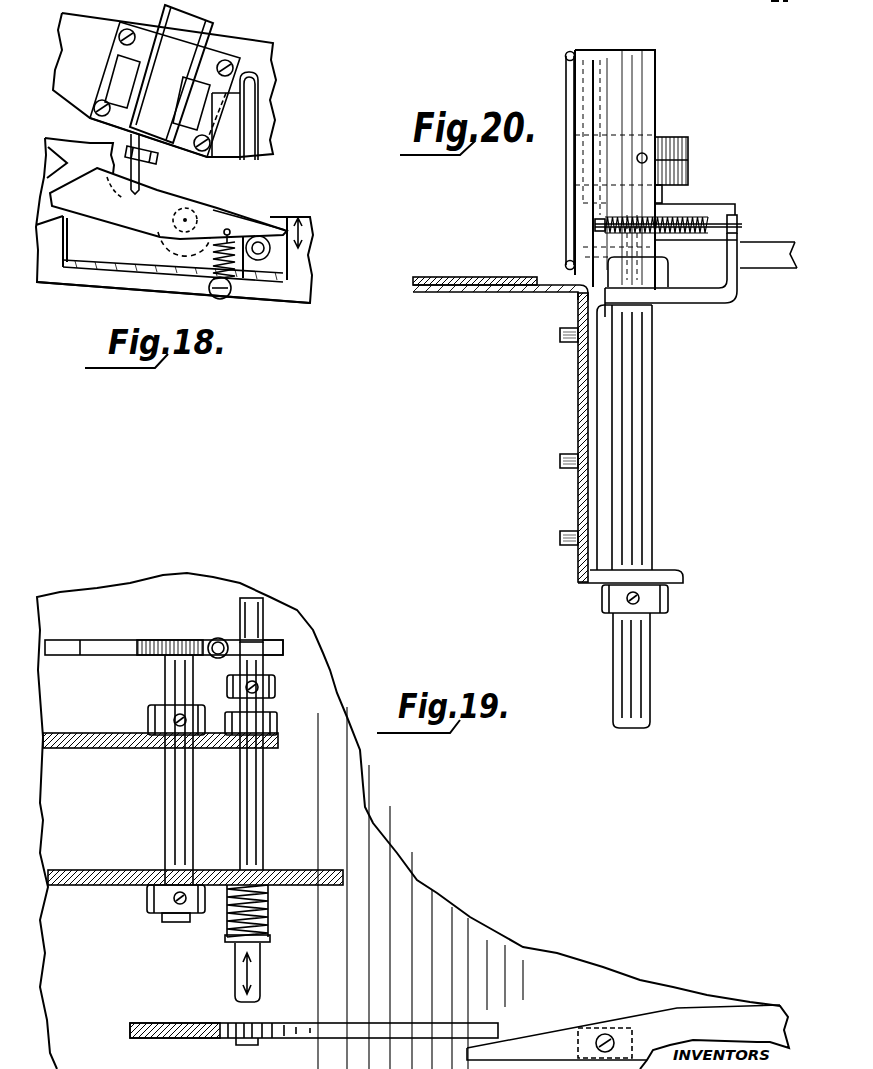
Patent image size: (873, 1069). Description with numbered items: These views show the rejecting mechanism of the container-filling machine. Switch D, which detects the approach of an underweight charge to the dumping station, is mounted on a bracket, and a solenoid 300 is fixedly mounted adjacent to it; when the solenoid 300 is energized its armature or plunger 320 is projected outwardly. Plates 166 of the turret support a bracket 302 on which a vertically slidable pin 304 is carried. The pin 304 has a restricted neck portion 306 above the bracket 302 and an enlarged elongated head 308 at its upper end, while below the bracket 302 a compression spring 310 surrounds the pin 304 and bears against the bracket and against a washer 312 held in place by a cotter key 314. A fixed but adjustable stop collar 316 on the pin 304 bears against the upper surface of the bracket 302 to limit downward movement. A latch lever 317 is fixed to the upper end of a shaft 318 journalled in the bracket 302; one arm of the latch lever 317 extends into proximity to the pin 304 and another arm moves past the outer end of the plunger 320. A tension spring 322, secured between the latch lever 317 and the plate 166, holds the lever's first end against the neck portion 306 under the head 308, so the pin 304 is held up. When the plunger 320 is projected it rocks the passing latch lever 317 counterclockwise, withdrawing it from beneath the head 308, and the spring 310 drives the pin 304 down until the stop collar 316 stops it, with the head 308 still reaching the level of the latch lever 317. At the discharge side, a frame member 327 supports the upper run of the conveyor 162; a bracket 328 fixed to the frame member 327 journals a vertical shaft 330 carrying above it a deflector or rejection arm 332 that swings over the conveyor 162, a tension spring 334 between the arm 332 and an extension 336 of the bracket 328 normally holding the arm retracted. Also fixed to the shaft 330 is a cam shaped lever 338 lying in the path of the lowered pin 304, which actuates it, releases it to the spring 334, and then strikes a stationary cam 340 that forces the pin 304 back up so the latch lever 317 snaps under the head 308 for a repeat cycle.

In FIG. 18, the solenoid 300 is at (182, 58).
In FIG. 18, the switch D is at (260, 100).
In FIG. 18, the armature or plunger 320 is at (142, 182).
In FIG. 18, the bracket 302 is at (290, 268).
In FIG. 19, the bracket 302 is at (108, 827).
In FIG. 18, the plate 166 is at (288, 295).
In FIG. 18, the latch lever 317 is at (210, 217).
In FIG. 19, the latch lever 317 is at (135, 648).
In FIG. 18, the shaft 318 is at (155, 215).
In FIG. 19, the shaft 318 is at (173, 690).
In FIG. 18, the tension spring 322 is at (210, 270).
In FIG. 19, the tension spring 322 is at (216, 637).
In FIG. 18, the vertically slidable pin 304 is at (262, 234).
In FIG. 19, the vertically slidable pin 304 is at (263, 810).
In FIG. 18, the enlarged elongated head 308 is at (258, 283).
In FIG. 19, the enlarged elongated head 308 is at (263, 610).
In FIG. 19, the stationary cam 340 is at (640, 1023).
In FIG. 19, the restricted neck portion 306 is at (262, 662).
In FIG. 19, the stop collar 316 is at (277, 688).
In FIG. 19, the compression spring 310 is at (267, 915).
In FIG. 19, the washer 312 is at (270, 938).
In FIG. 19, the cotter key 314 is at (260, 950).
In FIG. 19, the cam shaped lever 338 is at (156, 1022).
In FIG. 20, the cam shaped lever 338 is at (766, 250).
In FIG. 20, the deflector or rejection plate or arm 332 is at (565, 178).
In FIG. 20, the tension spring 334 is at (693, 217).
In FIG. 20, the extension 336 is at (735, 282).
In FIG. 20, the conveyor 162 is at (478, 276).
In FIG. 20, the frame member 327 is at (528, 292).
In FIG. 20, the bracket 328 is at (591, 398).
In FIG. 20, the vertical shaft 330 is at (640, 454).